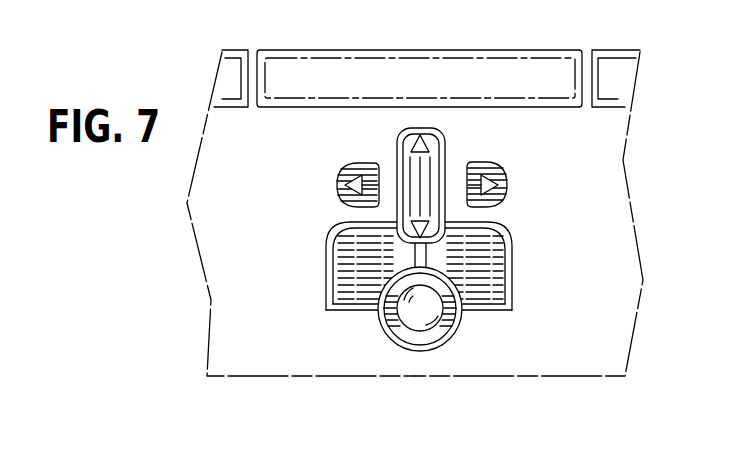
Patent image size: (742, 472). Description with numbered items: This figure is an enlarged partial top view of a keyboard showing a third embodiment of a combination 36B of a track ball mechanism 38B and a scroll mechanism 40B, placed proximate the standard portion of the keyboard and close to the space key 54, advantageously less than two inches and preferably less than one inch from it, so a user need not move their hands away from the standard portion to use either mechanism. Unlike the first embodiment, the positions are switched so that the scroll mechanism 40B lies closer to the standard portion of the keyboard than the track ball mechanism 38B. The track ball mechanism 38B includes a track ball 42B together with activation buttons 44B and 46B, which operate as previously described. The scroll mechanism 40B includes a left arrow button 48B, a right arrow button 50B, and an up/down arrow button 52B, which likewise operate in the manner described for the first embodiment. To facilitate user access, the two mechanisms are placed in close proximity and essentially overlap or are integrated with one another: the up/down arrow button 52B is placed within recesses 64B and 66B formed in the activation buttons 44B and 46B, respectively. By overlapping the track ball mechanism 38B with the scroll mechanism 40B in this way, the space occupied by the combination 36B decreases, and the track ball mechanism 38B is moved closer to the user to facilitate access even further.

The combination 36B is at (312, 348).
The track ball mechanism 38B is at (515, 342).
The scroll mechanism 40B is at (440, 237).
The track ball 42B is at (446, 322).
The activation button 44B is at (326, 257).
The activation button 46B is at (512, 258).
The left arrow button 48B is at (327, 177).
The right arrow button 50B is at (519, 179).
The up/down arrow button 52B is at (447, 155).
The space key 54 is at (522, 57).
The recess 64B is at (353, 218).
The recess 66B is at (473, 222).